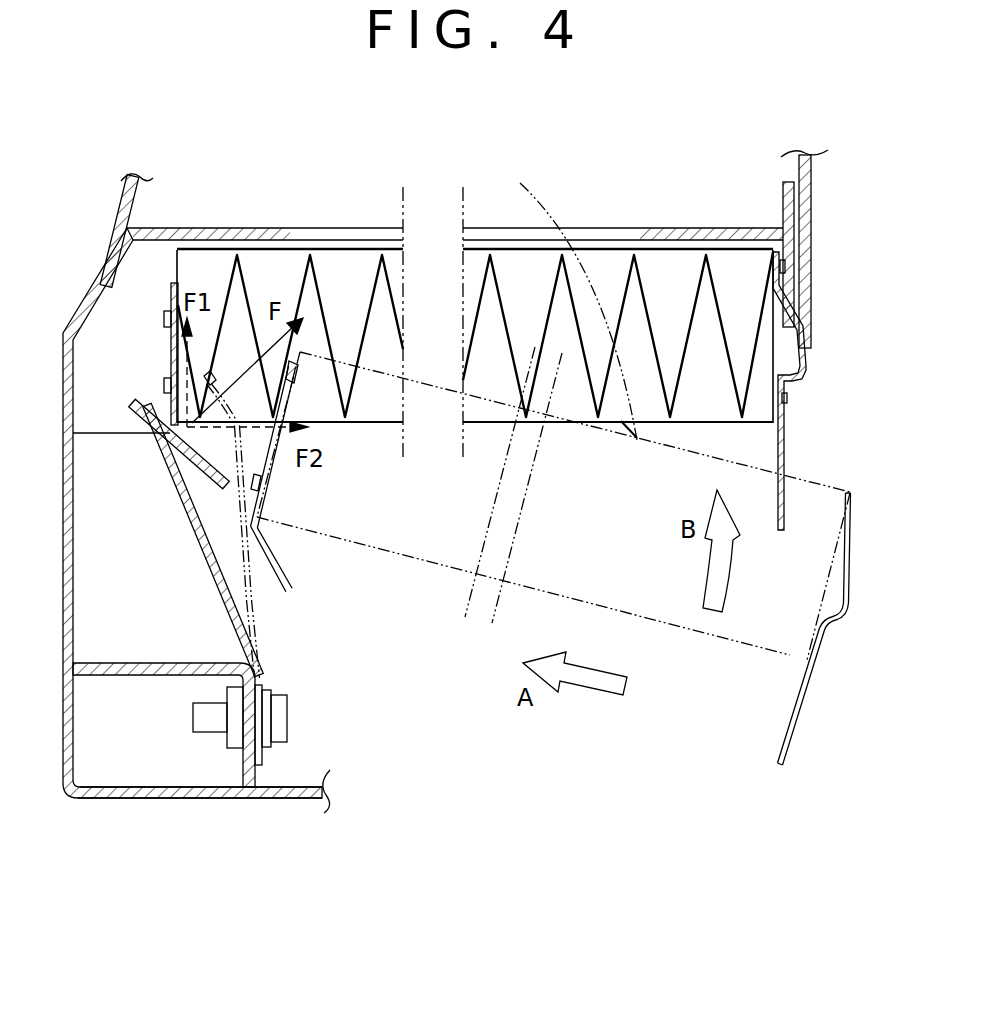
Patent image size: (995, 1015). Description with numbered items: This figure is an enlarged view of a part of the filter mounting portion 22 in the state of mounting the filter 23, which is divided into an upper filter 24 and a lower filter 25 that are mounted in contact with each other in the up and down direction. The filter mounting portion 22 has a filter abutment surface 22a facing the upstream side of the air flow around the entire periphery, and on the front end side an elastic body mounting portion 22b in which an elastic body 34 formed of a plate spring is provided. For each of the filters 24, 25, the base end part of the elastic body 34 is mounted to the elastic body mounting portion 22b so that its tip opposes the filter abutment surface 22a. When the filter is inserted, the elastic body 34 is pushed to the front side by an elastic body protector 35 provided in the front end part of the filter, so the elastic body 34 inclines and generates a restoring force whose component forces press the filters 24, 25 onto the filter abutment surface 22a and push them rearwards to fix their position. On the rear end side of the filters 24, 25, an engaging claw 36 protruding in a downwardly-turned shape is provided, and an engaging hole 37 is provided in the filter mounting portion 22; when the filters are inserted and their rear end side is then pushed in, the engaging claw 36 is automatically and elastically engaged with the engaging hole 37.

The filter mounting portion 22 is at (106, 258).
The filter abutment surface 22a is at (207, 255).
The elastic body mounting portion 22b is at (168, 799).
The filter 23 is at (520, 250).
The upper filter 24 is at (475, 334).
The lower filter 25 is at (475, 334).
The elastic body 34 is at (222, 584).
The elastic body protector 35 is at (203, 467).
The engaging claw 36 is at (808, 371).
The engaging hole 37 is at (809, 322).